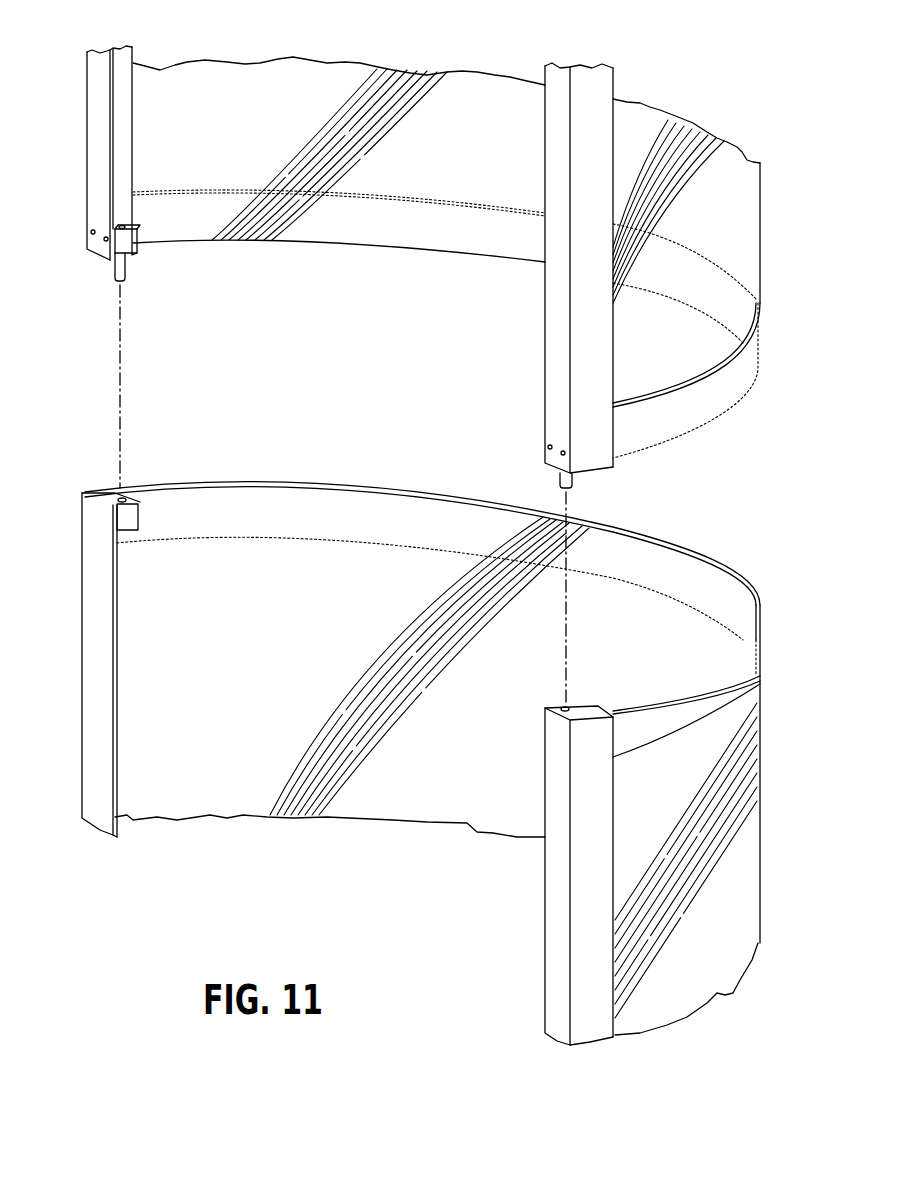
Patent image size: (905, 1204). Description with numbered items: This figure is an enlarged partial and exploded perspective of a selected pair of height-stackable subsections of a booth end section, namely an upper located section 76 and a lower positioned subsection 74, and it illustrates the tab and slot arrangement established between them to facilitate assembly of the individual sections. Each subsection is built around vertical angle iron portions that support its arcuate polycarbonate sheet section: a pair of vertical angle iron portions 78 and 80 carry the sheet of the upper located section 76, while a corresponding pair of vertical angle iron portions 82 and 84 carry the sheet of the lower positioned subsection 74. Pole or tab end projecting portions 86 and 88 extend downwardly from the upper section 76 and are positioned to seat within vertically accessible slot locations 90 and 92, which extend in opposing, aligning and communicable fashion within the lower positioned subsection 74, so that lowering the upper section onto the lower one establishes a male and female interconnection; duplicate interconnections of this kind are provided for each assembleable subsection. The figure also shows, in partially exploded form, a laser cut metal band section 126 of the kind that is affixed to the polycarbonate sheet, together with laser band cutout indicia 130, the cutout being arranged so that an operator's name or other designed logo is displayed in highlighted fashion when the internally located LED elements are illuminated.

The lower positioned subsection 74 is at (252, 661).
The upper located section 76 is at (264, 124).
The vertical angle iron portion 78 is at (100, 146).
The vertical angle iron portion 80 is at (555, 361).
The vertical angle iron portion 82 is at (103, 673).
The vertical angle iron portion 84 is at (560, 783).
The pole or tab end projecting portion 86 is at (123, 268).
The pole or tab end projecting portion 88 is at (558, 478).
The slot location 90 is at (118, 492).
The slot location 92 is at (567, 707).
The band section 126 is at (678, 418).
The laser band cutout indicia 130 is at (728, 572).